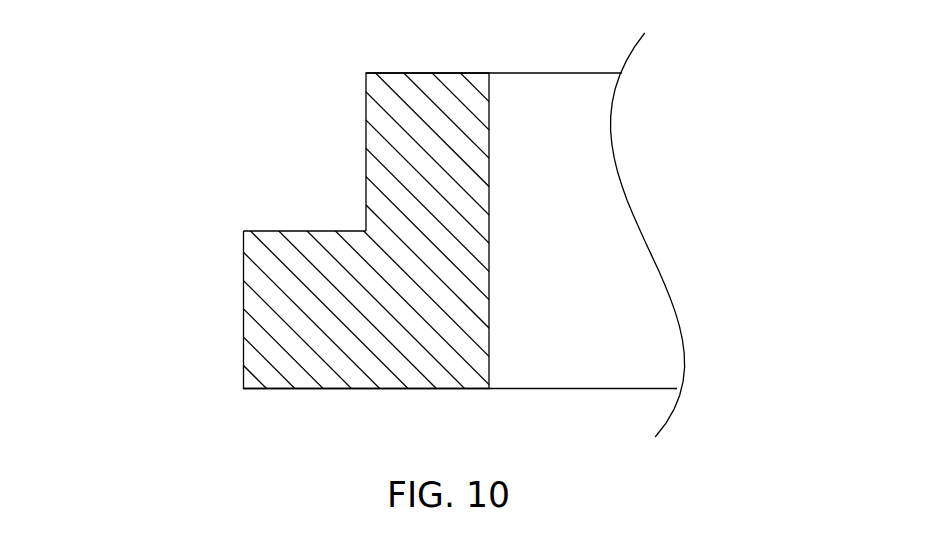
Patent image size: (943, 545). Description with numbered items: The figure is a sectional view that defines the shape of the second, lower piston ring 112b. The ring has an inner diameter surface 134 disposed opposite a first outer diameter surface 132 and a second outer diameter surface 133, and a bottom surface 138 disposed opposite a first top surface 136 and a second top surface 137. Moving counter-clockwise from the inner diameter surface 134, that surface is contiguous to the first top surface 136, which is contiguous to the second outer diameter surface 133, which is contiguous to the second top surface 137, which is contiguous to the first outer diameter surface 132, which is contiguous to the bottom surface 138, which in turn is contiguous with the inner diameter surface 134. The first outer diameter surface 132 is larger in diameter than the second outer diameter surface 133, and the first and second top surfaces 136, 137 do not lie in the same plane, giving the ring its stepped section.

The second piston ring 112b is at (126, 84).
The first outer diameter surface 132 is at (244, 297).
The second outer diameter surface 133 is at (367, 118).
The inner diameter surface 134 is at (489, 200).
The first top surface 136 is at (430, 73).
The second top surface 137 is at (303, 231).
The bottom surface 138 is at (370, 389).